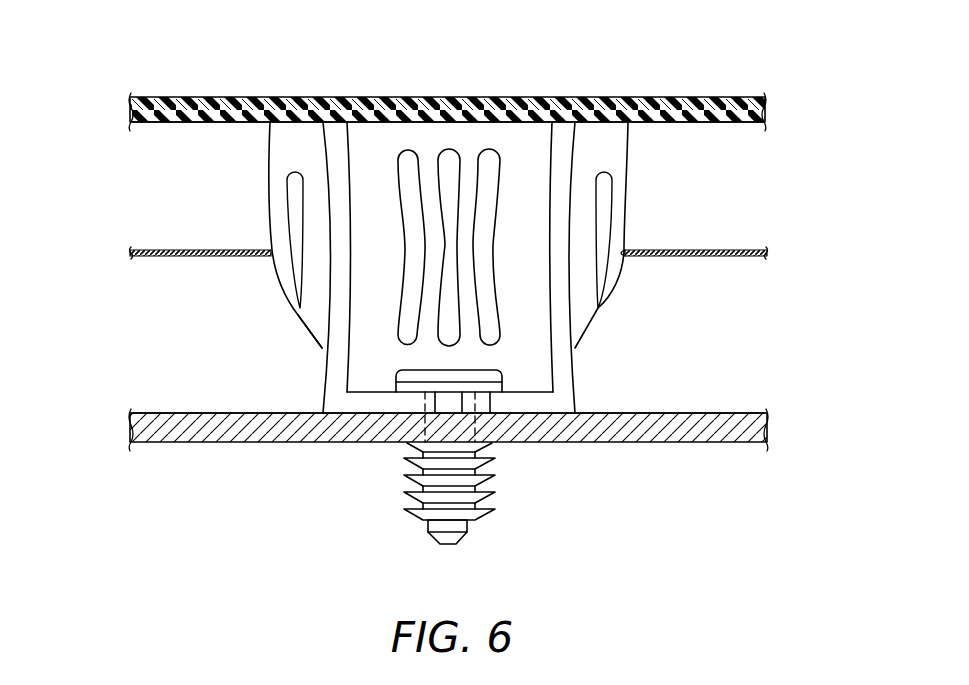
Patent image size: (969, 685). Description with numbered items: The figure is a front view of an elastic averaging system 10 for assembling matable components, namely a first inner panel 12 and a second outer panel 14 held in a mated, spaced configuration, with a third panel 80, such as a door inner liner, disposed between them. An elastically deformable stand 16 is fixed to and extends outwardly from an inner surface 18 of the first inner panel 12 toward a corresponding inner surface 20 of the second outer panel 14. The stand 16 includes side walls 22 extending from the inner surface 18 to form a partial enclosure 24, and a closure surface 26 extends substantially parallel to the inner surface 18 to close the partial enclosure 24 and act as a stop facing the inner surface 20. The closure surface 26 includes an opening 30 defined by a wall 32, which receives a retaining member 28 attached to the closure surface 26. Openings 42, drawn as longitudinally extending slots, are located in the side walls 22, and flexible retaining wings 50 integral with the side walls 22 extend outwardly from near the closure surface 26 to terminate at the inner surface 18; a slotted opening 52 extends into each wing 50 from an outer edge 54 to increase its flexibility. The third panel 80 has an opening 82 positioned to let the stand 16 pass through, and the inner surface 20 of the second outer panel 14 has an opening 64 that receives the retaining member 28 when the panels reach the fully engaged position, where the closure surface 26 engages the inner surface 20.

The elastic averaging system 10 is at (482, 306).
The first inner panel 12 is at (670, 96).
The second outer panel 14 is at (712, 450).
The elastically deformable stand 16 is at (448, 230).
The inner surface of first inner panel 18 is at (690, 123).
The inner surface of second outer panel 20 is at (713, 412).
The side wall 22 is at (560, 305).
The partial enclosure 24 is at (523, 150).
The closure surface 26 is at (532, 403).
The retaining member 28 is at (476, 536).
The opening 30 is at (410, 405).
The wall 32 is at (425, 410).
The openings 42 is at (400, 172).
The flexible retaining wings 50 is at (448, 243).
The slotted opening 52 is at (293, 290).
The outer edge 54 is at (316, 343).
The opening 64 is at (486, 428).
The third panel 80 is at (750, 246).
The opening 82 is at (625, 252).